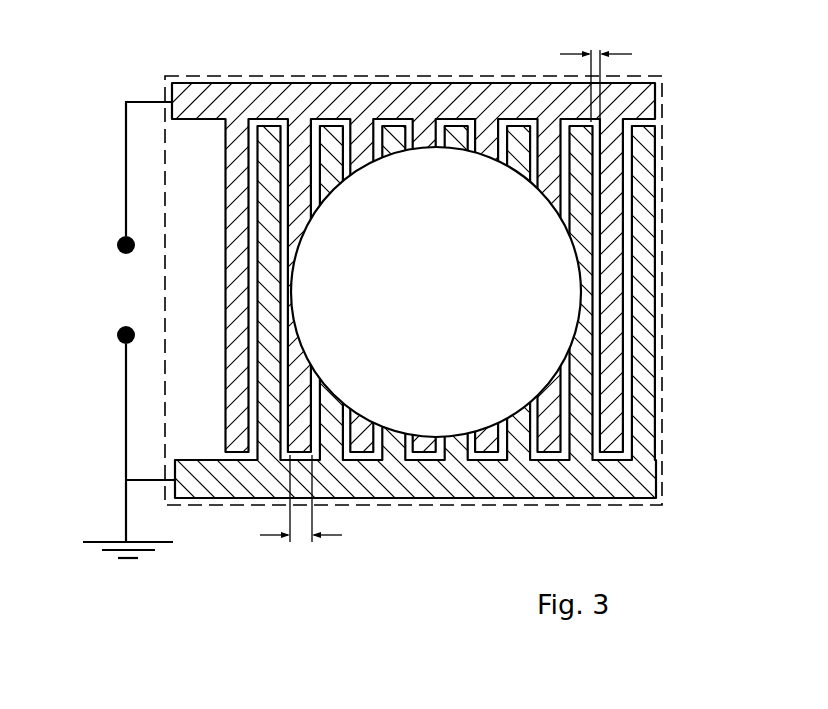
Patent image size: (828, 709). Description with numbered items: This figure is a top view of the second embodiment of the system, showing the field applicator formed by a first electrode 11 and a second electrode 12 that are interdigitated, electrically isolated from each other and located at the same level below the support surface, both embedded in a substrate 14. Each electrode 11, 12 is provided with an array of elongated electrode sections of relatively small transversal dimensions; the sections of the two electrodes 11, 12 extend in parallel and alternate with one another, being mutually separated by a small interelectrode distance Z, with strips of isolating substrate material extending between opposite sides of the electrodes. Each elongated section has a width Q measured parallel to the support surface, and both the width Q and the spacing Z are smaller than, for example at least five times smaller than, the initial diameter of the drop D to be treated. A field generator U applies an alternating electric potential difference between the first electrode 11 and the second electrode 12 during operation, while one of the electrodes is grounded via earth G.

The first electrode 11 is at (543, 477).
The second electrode 12 is at (538, 102).
The substrate 14 is at (237, 73).
The drop D is at (427, 304).
The field generator U is at (144, 322).
The earth G is at (93, 540).
The interelectrode distance Z is at (596, 74).
The width of elongated electrode section Q is at (301, 510).